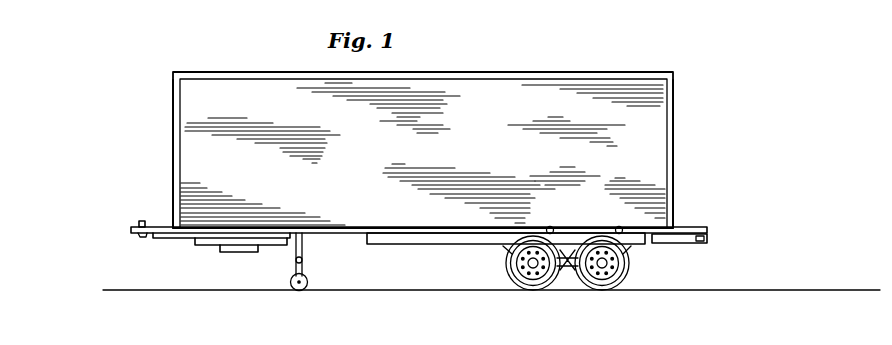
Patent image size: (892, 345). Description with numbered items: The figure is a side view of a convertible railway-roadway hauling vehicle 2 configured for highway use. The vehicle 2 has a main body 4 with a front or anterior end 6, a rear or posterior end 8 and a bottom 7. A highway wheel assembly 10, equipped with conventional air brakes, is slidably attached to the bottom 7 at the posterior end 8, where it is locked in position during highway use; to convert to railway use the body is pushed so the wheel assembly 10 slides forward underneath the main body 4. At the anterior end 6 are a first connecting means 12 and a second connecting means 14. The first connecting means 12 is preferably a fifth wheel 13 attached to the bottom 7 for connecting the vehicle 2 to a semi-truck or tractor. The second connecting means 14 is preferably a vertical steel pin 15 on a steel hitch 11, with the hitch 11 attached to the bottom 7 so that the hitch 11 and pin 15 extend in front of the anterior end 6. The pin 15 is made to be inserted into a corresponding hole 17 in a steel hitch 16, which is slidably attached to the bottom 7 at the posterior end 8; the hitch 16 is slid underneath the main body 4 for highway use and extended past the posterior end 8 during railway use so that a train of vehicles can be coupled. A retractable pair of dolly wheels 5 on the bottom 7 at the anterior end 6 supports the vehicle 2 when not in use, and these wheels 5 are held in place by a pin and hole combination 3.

The vehicle 2 is at (551, 69).
The main body 4 is at (216, 69).
The anterior end 6 is at (173, 140).
The posterior end 8 is at (673, 143).
The second connecting means 14 is at (139, 218).
The vertical steel pin 15 is at (143, 234).
The steel hitch 11 is at (152, 238).
The first connecting means 12 is at (222, 260).
The fifth wheel 13 is at (250, 253).
The pin and hole combination 3 is at (302, 260).
The dolly wheels 5 is at (309, 289).
The bottom 7 is at (363, 235).
The highway wheel assembly 10 is at (624, 293).
The hole 17 is at (695, 233).
The steel hitch 16 is at (676, 243).